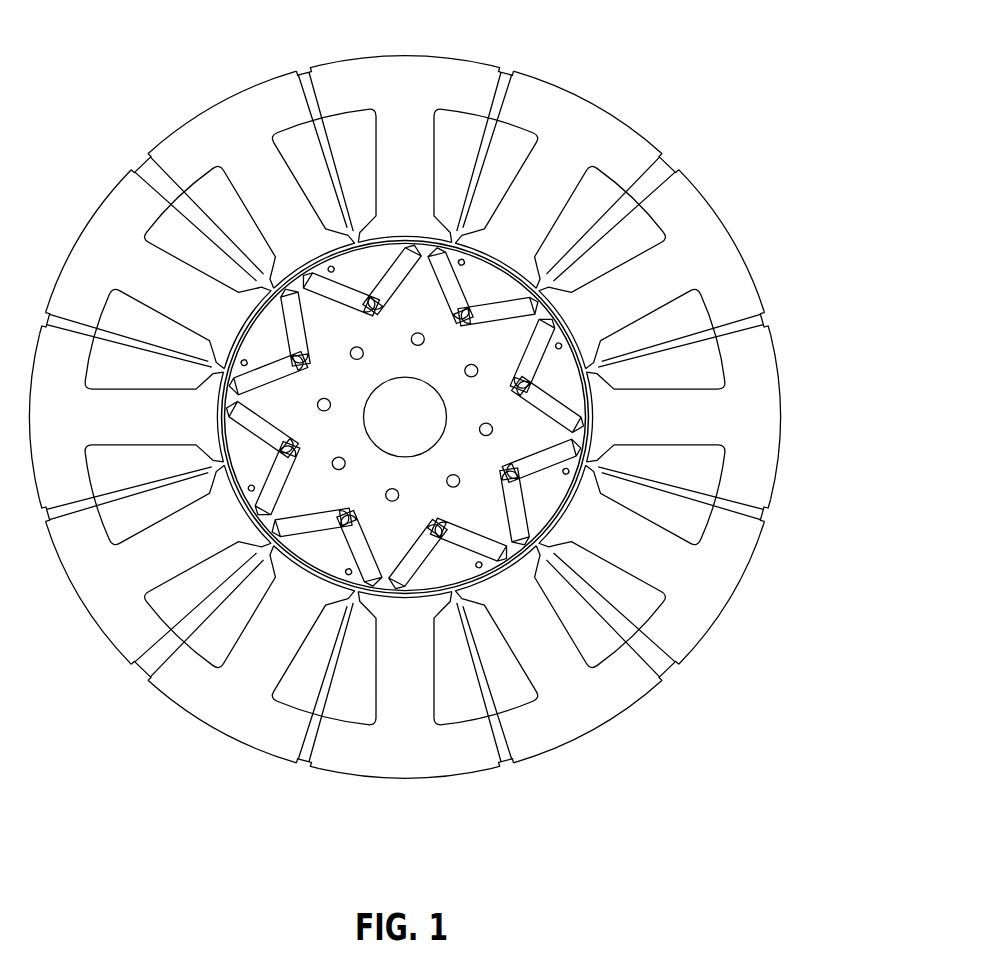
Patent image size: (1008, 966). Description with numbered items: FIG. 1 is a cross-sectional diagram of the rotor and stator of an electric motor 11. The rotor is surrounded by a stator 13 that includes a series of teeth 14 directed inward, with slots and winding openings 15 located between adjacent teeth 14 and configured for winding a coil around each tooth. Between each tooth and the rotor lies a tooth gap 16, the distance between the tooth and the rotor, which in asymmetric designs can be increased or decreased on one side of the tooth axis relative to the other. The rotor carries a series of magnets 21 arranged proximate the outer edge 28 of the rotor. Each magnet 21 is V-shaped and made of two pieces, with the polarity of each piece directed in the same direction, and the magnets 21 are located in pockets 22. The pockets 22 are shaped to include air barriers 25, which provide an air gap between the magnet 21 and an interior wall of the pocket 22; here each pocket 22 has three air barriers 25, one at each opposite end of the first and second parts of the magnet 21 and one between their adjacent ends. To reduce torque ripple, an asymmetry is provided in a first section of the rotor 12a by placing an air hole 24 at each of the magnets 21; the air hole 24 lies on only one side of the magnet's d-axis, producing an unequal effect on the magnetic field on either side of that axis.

The electric motor 11 is at (533, 790).
The first section of the rotor 12a is at (425, 305).
The stator 13 is at (447, 432).
The teeth 14 is at (298, 592).
The slots and winding openings 15 is at (648, 508).
The tooth gap 16 is at (244, 330).
The magnets 21 is at (552, 408).
The pockets 22 is at (305, 522).
The air hole 24 is at (337, 269).
The air barriers 25 is at (590, 457).
The outer edge 28 is at (556, 543).